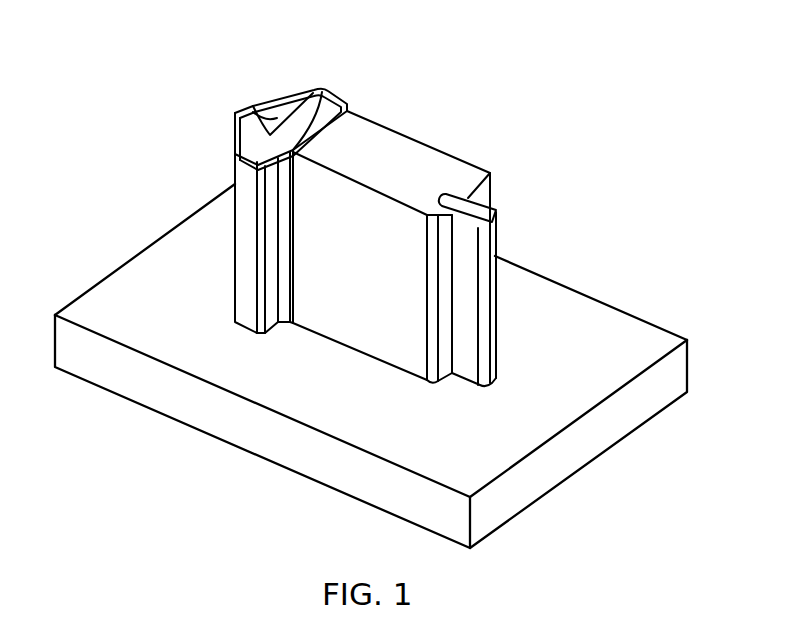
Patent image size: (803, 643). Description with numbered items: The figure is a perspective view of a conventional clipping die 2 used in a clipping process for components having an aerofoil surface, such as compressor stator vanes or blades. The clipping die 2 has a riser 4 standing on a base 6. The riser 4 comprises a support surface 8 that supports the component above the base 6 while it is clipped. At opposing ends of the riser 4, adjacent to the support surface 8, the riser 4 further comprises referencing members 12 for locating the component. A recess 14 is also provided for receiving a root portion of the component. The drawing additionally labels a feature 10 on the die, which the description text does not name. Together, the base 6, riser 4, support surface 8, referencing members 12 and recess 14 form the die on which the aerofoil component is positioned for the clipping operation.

The clipping die 2 is at (160, 193).
The riser 4 is at (233, 247).
The base 6 is at (107, 305).
The support surface 8 is at (392, 155).
The guide channel 10 is at (452, 157).
The referencing members 12 is at (255, 104).
The recess 14 is at (330, 100).